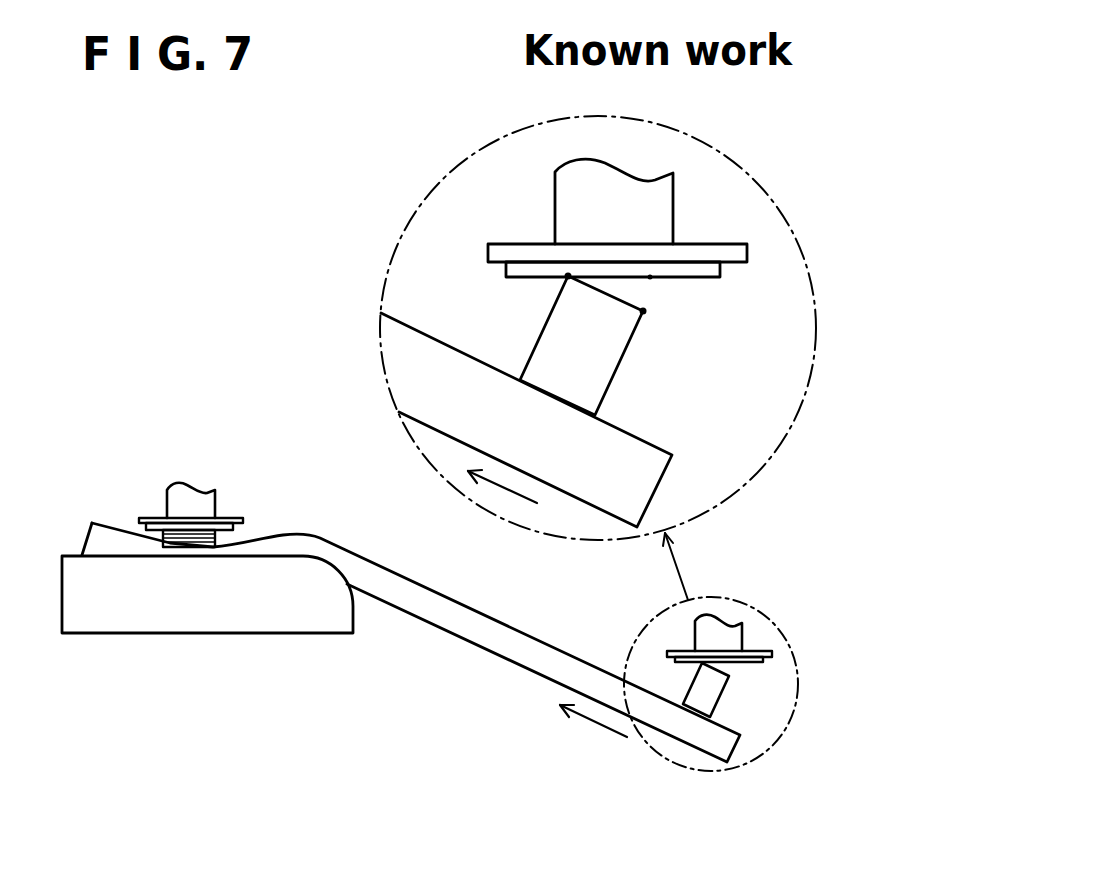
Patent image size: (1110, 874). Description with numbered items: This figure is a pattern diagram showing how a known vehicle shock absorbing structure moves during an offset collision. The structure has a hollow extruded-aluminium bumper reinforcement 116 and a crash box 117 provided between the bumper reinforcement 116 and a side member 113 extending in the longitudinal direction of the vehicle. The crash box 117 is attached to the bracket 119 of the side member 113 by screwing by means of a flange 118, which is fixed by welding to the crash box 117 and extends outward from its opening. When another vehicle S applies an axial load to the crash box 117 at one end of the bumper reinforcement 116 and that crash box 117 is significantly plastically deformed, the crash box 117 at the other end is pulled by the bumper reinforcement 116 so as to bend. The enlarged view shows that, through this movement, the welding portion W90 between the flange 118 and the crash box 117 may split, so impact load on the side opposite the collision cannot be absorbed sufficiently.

The side member 113 is at (218, 495).
The bumper reinforcement 116 is at (472, 640).
The crash box 117 is at (212, 548).
The flange 118 is at (147, 528).
The bracket 119 is at (158, 518).
The another vehicle S is at (103, 625).
The welding portion W90 is at (568, 277).